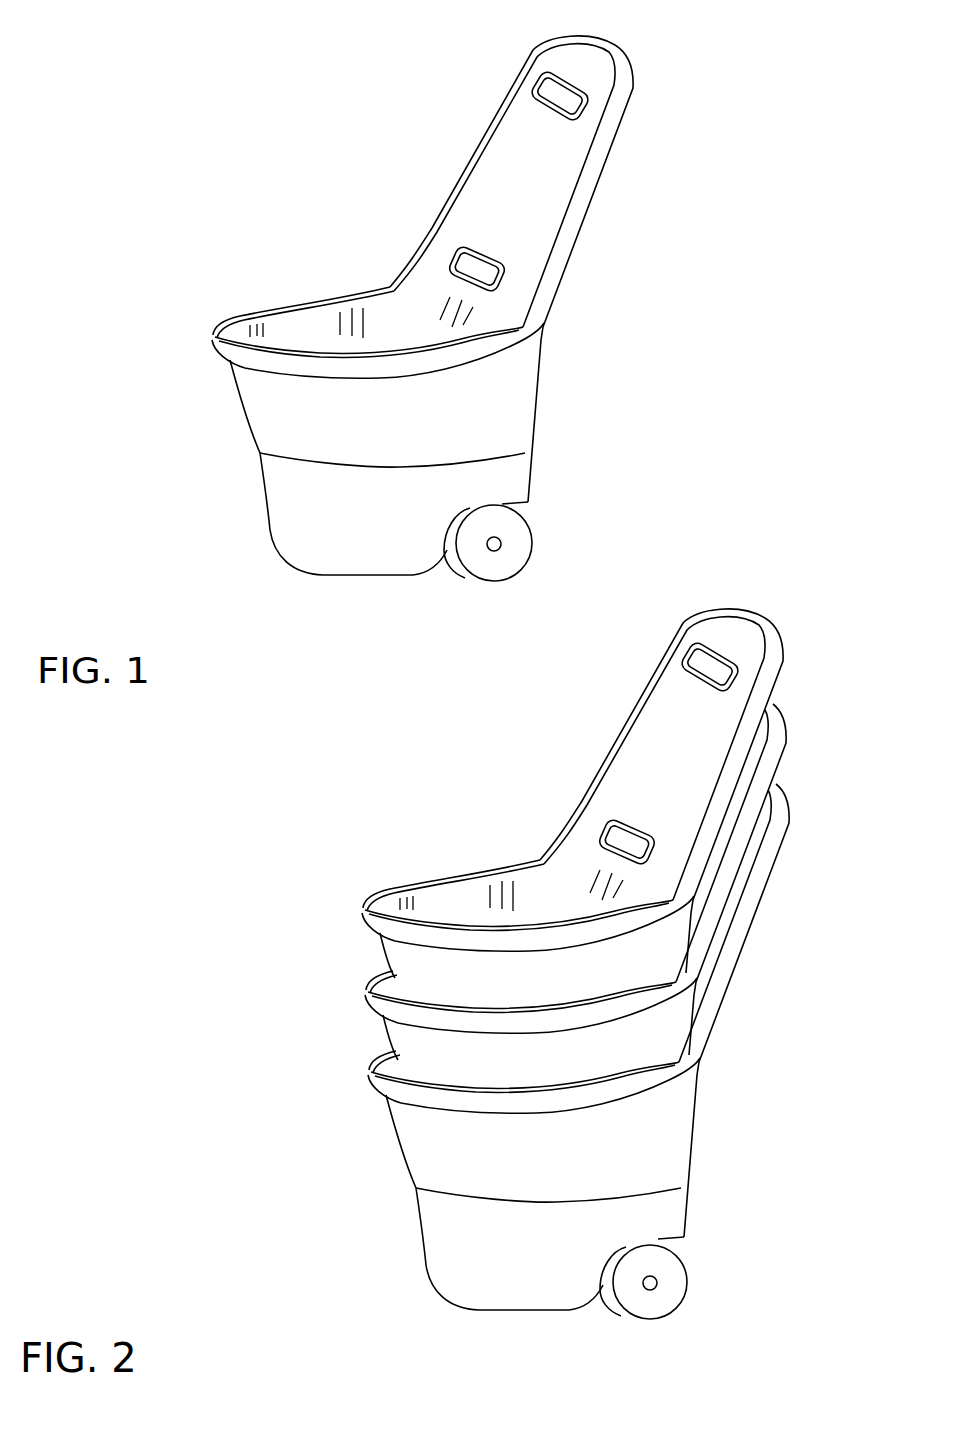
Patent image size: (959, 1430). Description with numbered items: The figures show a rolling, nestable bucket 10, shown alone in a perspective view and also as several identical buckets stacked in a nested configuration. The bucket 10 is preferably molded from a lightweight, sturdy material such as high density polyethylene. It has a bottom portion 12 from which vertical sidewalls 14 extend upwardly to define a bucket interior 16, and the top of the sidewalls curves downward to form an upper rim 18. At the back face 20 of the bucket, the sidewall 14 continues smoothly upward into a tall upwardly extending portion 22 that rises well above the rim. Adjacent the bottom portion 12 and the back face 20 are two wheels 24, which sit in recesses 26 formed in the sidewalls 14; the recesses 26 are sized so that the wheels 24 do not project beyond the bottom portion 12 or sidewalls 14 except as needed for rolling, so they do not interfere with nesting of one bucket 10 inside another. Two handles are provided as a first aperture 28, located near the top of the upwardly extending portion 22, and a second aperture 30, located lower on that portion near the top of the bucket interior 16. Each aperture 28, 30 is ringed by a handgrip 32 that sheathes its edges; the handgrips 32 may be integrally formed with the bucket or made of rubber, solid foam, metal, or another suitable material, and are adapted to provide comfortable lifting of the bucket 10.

In FIG. 1, the bucket 10 is at (742, 244).
In FIG. 2, the bucket 10 is at (290, 960).
In FIG. 1, the bottom portion 12 is at (362, 575).
In FIG. 1, the vertical sidewalls 14 is at (287, 430).
In FIG. 1, the bucket interior 16 is at (320, 318).
In FIG. 1, the upper rim 18 is at (220, 343).
In FIG. 1, the back face 20 is at (566, 410).
In FIG. 1, the upwardly extending portion 22 is at (497, 199).
In FIG. 1, the wheels 24 is at (494, 546).
In FIG. 1, the recesses 26 is at (508, 505).
In FIG. 1, the first aperture 28 is at (567, 104).
In FIG. 1, the second aperture 30 is at (490, 277).
In FIG. 1, the handgrip 32 is at (581, 86).